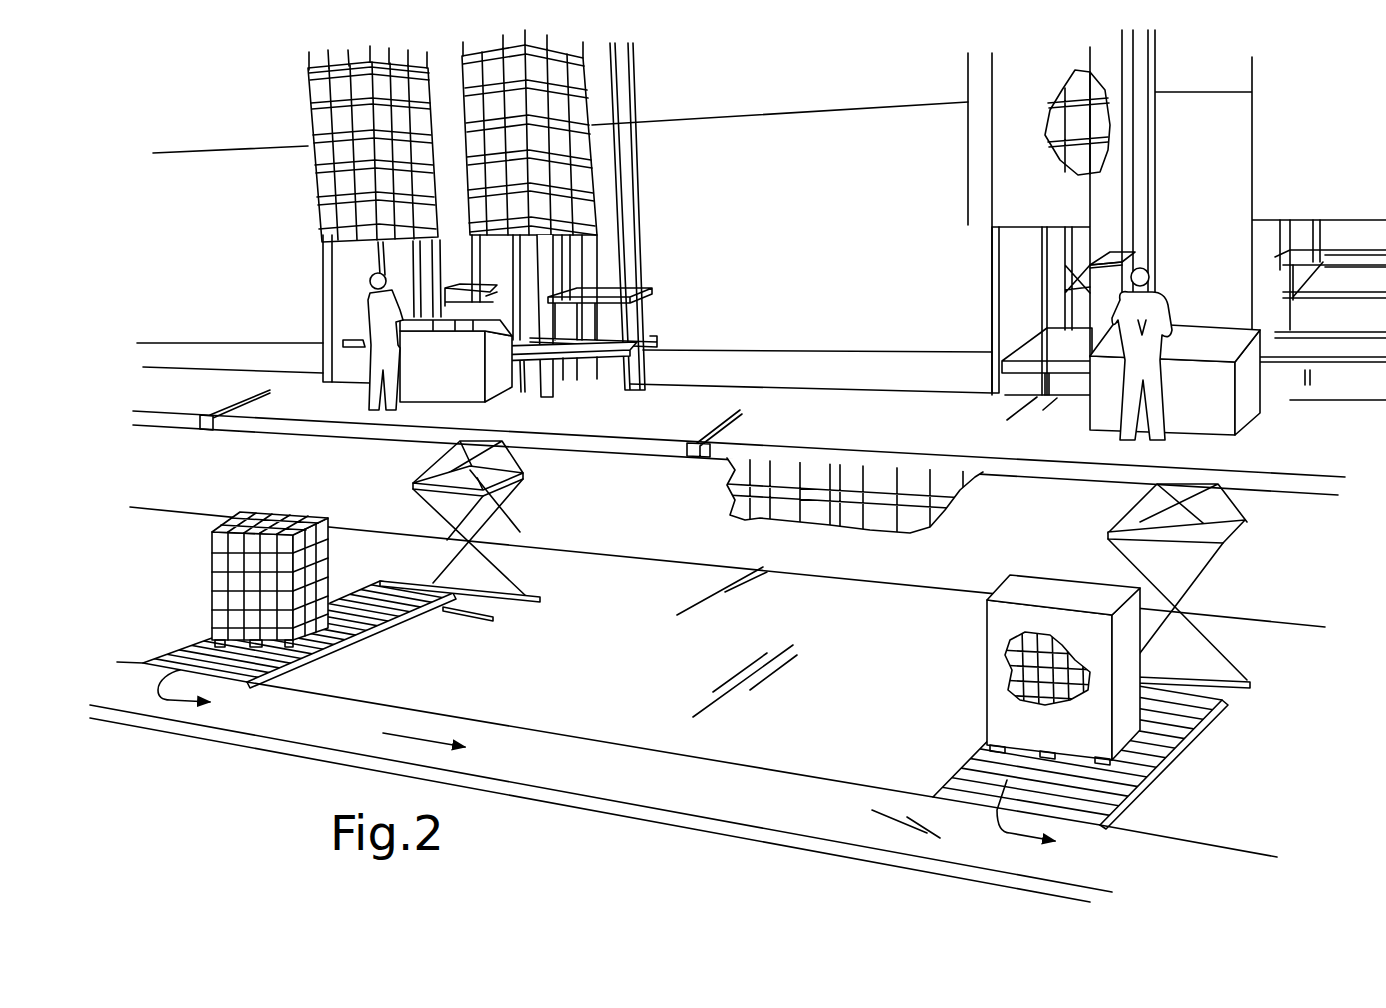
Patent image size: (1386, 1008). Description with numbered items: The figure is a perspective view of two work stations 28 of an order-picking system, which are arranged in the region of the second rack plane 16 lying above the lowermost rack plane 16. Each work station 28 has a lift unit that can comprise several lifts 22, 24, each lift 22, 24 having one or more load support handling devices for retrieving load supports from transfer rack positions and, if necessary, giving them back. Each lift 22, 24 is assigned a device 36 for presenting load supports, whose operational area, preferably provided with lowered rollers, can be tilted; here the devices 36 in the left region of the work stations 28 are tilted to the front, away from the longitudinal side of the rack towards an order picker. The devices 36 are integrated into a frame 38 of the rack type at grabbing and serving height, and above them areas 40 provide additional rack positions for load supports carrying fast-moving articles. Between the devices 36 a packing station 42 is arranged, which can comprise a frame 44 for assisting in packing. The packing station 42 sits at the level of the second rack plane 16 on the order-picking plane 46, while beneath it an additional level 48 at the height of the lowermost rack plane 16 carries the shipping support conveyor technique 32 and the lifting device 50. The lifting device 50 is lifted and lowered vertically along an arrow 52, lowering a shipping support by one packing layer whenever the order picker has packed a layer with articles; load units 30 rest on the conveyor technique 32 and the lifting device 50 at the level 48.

The rack plane 16 is at (832, 258).
The lift 22 is at (453, 272).
The lift 24 is at (612, 325).
The work station 28 is at (346, 396).
The load unit 30 is at (330, 538).
The shipping support conveyor technique 32 is at (538, 733).
The device for presenting load supports 36 is at (522, 365).
The frame 38 is at (323, 312).
The area for providing additional rack positions 40 is at (305, 238).
The packing station 42 is at (443, 372).
The frame 44 is at (1215, 405).
The order-picking plane 46 is at (160, 422).
The additional level 48 is at (1240, 800).
The lifting device 50 is at (517, 572).
The arrow 52 is at (1250, 550).